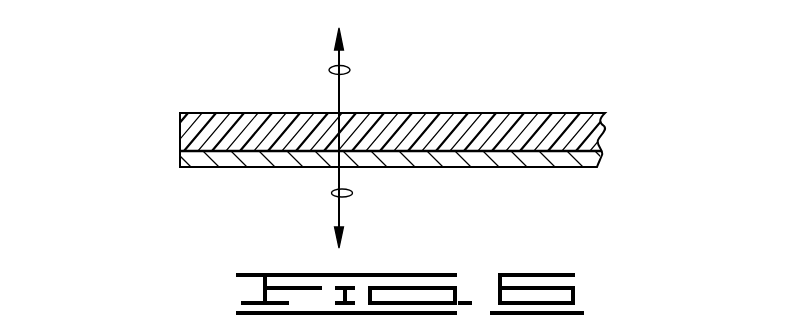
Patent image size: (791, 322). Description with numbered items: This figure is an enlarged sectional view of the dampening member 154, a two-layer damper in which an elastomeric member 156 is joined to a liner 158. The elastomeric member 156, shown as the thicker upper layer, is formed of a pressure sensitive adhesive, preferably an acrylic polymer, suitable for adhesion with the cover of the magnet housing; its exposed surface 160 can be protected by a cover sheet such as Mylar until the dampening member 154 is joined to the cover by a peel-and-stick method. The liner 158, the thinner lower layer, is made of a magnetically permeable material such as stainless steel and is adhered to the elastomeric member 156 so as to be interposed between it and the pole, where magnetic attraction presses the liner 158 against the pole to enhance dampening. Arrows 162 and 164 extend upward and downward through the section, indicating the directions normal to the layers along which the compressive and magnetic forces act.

The dampening member 154 is at (388, 45).
The elastomeric member 156 is at (180, 122).
The liner 158 is at (180, 160).
The surface 160 is at (290, 113).
The first direction arrow 162 is at (350, 70).
The second direction arrow 164 is at (353, 193).